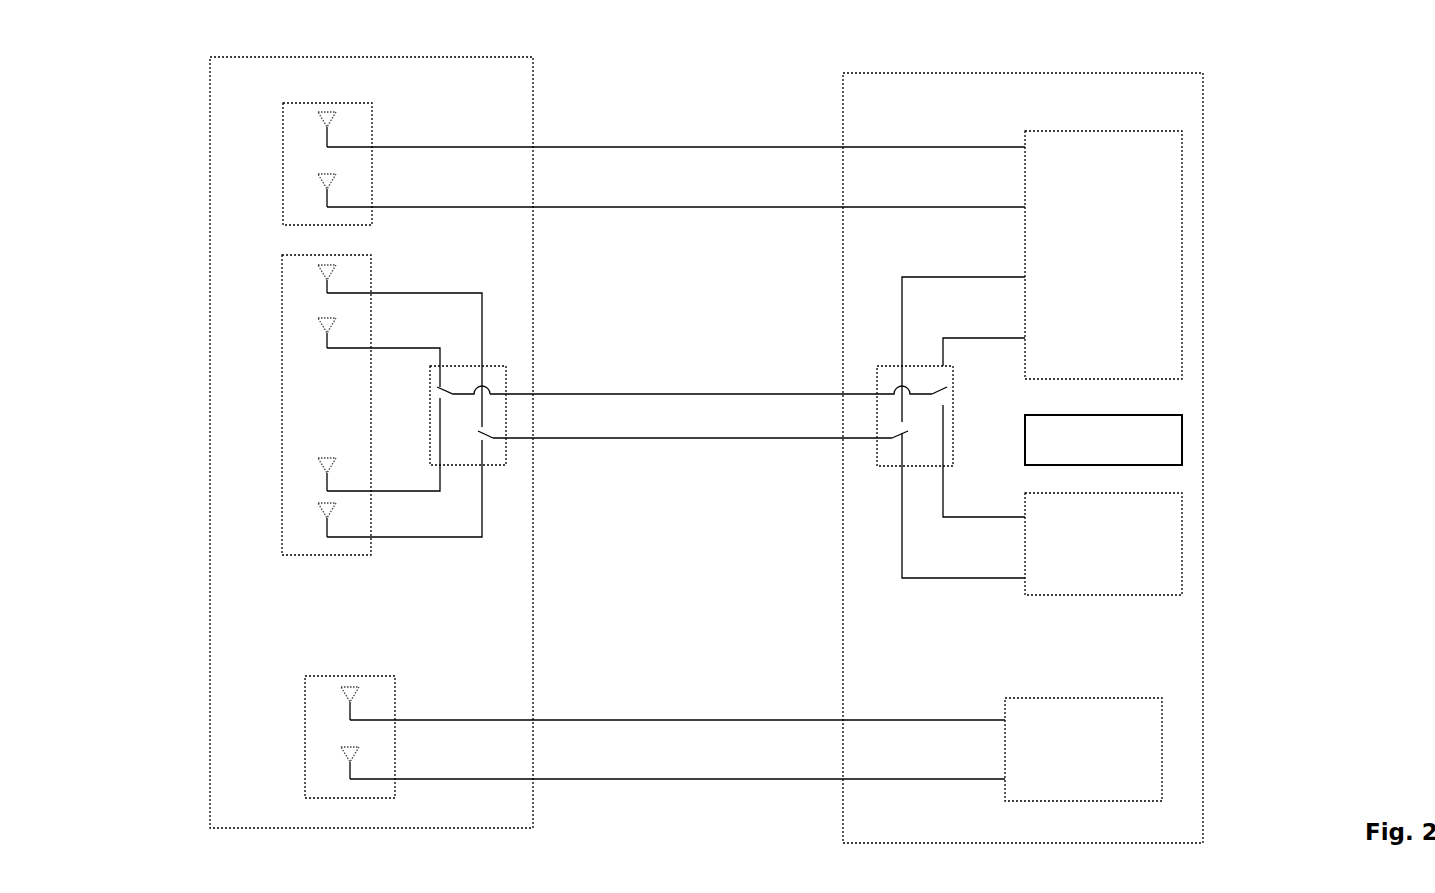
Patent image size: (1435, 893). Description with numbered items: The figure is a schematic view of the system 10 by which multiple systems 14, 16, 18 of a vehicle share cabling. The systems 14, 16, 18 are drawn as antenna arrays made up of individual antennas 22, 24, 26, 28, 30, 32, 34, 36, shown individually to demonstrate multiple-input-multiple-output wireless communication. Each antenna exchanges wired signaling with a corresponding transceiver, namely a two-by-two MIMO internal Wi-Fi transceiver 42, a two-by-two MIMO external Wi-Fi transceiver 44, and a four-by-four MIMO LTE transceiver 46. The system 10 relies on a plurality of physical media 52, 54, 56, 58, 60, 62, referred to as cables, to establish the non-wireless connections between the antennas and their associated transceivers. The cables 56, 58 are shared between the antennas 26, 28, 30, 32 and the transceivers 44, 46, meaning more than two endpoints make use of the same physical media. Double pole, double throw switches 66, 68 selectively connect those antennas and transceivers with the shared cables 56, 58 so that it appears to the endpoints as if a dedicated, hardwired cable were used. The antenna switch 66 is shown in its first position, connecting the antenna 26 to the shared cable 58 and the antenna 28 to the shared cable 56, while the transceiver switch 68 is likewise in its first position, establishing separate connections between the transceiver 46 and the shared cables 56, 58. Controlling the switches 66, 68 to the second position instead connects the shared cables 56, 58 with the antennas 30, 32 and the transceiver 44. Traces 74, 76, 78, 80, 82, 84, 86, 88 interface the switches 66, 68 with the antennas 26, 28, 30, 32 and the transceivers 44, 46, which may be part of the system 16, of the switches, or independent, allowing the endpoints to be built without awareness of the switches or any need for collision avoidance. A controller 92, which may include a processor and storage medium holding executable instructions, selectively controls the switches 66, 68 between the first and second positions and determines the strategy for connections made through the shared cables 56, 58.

The system 10 is at (136, 85).
The system 14 is at (305, 730).
The system 16 is at (282, 311).
The system 18 is at (283, 161).
The antenna 22 is at (318, 120).
The antenna 24 is at (318, 186).
The antenna 26 is at (318, 276).
The antenna 28 is at (318, 327).
The antenna 30 is at (318, 469).
The antenna 32 is at (318, 514).
The antenna 34 is at (343, 700).
The antenna 36 is at (343, 760).
The internal Wi-Fi transceiver 42 is at (1083, 749).
The external Wi-Fi transceiver 44 is at (1103, 544).
The LTE transceiver 46 is at (1103, 255).
The physical medium 52 is at (390, 147).
The physical medium 54 is at (390, 207).
The shared cable 56 is at (826, 394).
The shared cable 58 is at (820, 438).
The physical medium 60 is at (428, 720).
The physical medium 62 is at (428, 779).
The antenna switch 66 is at (493, 366).
The transceiver switch 68 is at (915, 366).
The trace 74 is at (390, 293).
The trace 76 is at (390, 348).
The trace 78 is at (390, 491).
The trace 80 is at (390, 537).
The trace 82 is at (963, 277).
The trace 84 is at (963, 338).
The trace 86 is at (963, 517).
The trace 88 is at (963, 578).
The controller 92 is at (1103, 440).